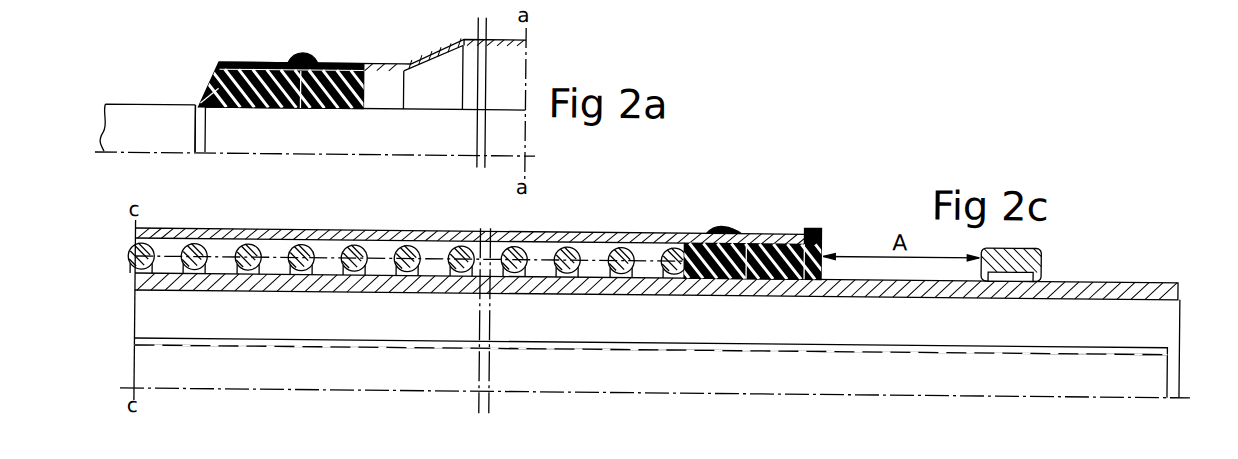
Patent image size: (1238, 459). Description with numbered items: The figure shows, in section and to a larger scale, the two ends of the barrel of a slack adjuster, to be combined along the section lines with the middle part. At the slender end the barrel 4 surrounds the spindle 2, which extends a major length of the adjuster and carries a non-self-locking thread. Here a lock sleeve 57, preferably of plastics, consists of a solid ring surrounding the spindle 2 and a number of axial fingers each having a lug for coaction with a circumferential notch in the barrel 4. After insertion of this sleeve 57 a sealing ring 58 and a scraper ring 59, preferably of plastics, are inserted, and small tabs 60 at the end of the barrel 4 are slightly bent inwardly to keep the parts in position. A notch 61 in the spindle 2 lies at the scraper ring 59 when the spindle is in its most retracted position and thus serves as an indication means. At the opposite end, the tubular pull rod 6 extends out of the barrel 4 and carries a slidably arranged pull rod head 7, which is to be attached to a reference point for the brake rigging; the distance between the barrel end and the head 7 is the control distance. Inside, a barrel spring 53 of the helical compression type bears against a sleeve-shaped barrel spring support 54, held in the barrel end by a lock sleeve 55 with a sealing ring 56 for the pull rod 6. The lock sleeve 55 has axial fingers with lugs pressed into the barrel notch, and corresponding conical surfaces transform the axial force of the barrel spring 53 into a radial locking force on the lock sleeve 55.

In FIG. 2A, the spindle 2 is at (138, 110).
In FIG. 2C, the spindle 2 is at (1065, 368).
In FIG. 2A, the barrel 4 is at (418, 60).
In FIG. 2C, the barrel 4 is at (565, 234).
In FIG. 2C, the tubular pull rod 6 is at (1055, 282).
In FIG. 2C, the pull rod head 7 is at (1030, 243).
In FIG. 2C, the barrel spring 53 is at (621, 252).
In FIG. 2C, the barrel spring support 54 is at (700, 238).
In FIG. 2C, the lock sleeve 55 is at (745, 238).
In FIG. 2C, the sealing ring 56 is at (790, 238).
In FIG. 2A, the lock sleeve 57 is at (343, 70).
In FIG. 2A, the sealing ring 58 is at (234, 72).
In FIG. 2A, the scraper ring 59 is at (208, 92).
In FIG. 2A, the tabs 60 is at (218, 64).
In FIG. 2A, the notch 61 is at (197, 128).